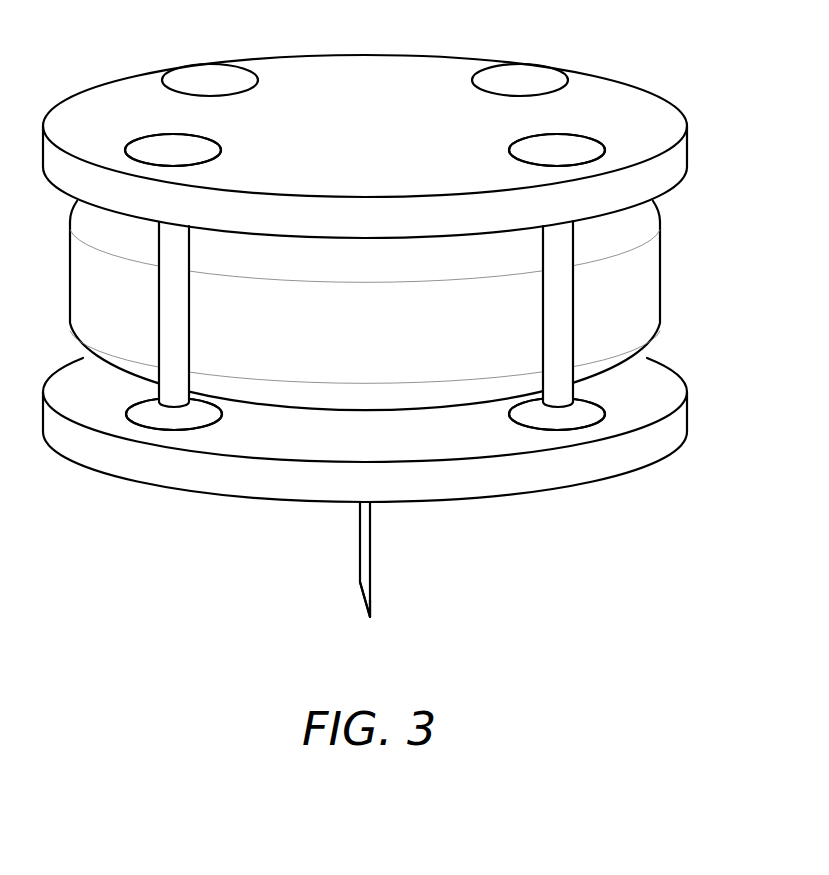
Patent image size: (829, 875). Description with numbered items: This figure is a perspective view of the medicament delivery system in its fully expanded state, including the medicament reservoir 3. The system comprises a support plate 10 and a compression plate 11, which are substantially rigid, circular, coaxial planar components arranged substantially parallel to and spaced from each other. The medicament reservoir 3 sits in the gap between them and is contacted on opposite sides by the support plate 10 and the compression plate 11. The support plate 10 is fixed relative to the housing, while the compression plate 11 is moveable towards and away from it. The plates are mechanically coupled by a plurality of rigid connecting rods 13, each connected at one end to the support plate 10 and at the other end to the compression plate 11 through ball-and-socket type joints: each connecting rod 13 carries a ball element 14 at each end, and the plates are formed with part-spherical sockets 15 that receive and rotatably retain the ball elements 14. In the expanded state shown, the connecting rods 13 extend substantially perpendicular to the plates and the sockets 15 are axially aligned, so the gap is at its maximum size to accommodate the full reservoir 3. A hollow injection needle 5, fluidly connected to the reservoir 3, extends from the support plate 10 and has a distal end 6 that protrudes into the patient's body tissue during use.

The medicament reservoir 3 is at (77, 281).
The hollow injection needle 5 is at (372, 533).
The distal end 6 is at (372, 616).
The support plate 10 is at (679, 425).
The compression plate 11 is at (679, 162).
The connecting rod 13 is at (562, 303).
The ball element 14 is at (148, 147).
The part-spherical socket 15 is at (217, 162).